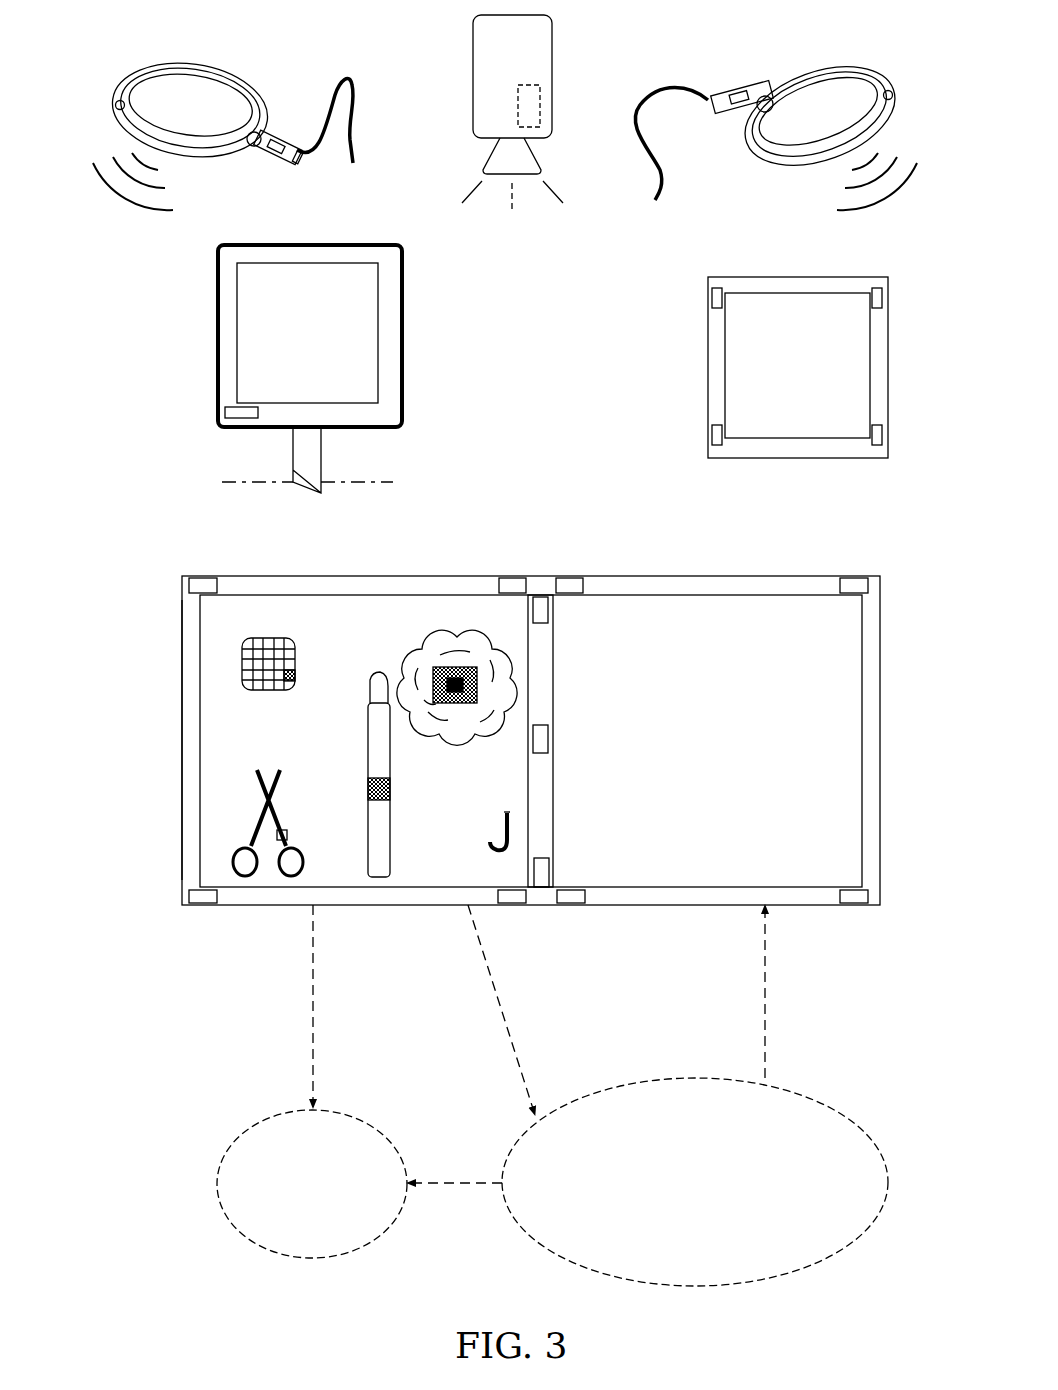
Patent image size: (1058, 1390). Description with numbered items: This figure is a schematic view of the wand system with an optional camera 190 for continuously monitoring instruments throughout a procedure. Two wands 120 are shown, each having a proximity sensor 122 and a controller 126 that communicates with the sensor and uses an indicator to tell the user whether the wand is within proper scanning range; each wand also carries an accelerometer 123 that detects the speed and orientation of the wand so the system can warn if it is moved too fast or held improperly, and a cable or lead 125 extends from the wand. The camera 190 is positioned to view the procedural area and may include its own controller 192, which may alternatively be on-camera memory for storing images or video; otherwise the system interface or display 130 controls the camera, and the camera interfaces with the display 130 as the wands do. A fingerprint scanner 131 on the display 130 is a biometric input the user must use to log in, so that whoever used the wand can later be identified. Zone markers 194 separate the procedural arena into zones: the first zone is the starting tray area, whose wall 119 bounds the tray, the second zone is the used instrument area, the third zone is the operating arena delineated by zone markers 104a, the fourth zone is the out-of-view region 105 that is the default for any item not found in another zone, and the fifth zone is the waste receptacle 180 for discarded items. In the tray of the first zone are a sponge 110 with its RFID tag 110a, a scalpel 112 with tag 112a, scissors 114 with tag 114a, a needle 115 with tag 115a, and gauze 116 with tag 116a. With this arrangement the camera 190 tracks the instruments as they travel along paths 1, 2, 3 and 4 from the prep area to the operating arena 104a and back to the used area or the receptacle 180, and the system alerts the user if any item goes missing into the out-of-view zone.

The wand 120 is at (185, 62).
The proximity sensor 122 is at (116, 104).
The accelerometer 123 is at (257, 131).
The cable 125 is at (767, 90).
The controller 126 is at (279, 160).
The camera 190 is at (473, 78).
The controller 192 is at (540, 108).
The system interface 130 is at (373, 377).
The fingerprint scanner 131 is at (232, 412).
The receptacle 180 is at (730, 383).
The zone markers 194 is at (712, 296).
The tray wall 119 is at (180, 740).
The gauze 116 is at (295, 660).
The RFID tag 116a is at (290, 682).
The sponge 110 is at (462, 645).
The RFID tag 110a is at (452, 690).
The scalpel 112 is at (390, 842).
The RFID tag 112a is at (390, 790).
The scissors 114 is at (262, 802).
The RFID tag 114a is at (287, 835).
The needle 115 is at (492, 843).
The RFID tag 115a is at (508, 830).
The out of view zone 105 is at (225, 1125).
The zone markers 104a is at (850, 1120).
The Zone 1 is at (507, 1028).
The Zone 2 is at (767, 1022).
The Zone 3 is at (312, 1016).
The Zone 4 is at (466, 1185).